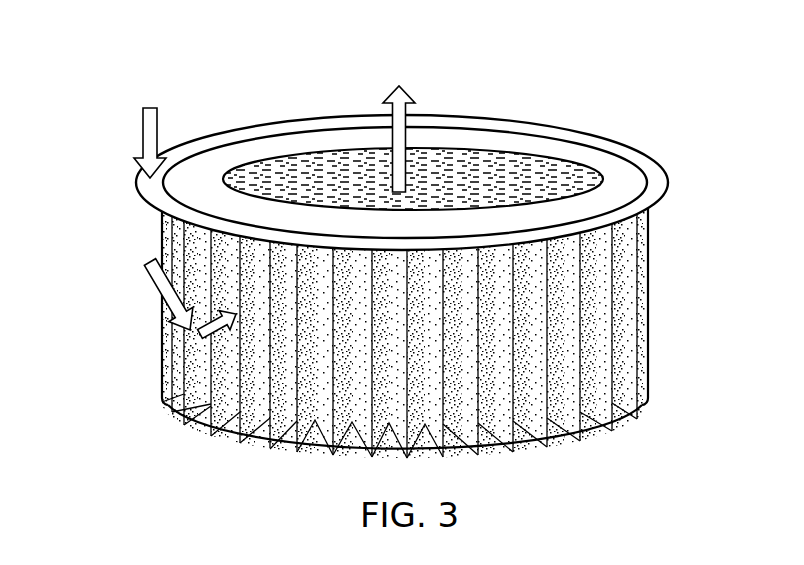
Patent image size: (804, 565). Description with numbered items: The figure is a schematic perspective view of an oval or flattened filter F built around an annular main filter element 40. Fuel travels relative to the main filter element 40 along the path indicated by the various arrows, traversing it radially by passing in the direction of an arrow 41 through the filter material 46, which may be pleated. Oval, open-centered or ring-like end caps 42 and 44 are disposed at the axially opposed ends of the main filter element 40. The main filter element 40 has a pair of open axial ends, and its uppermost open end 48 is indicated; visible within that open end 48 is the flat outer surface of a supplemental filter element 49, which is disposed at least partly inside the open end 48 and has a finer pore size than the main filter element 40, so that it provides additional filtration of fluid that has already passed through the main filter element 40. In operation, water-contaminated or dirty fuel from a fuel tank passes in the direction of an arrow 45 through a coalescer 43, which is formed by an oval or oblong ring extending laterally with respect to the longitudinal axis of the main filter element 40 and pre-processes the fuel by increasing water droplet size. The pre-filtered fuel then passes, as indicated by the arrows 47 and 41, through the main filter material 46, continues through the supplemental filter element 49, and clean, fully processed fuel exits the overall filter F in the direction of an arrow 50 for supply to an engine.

The main filter element 40 is at (459, 352).
The arrow 41 is at (212, 334).
The end cap 42 is at (597, 146).
The coalescer 43 is at (670, 167).
The end cap 44 is at (563, 443).
The arrow 45 is at (142, 122).
The filter material 46 is at (613, 361).
The arrow 47 is at (150, 278).
The uppermost open end 48 is at (283, 153).
The supplemental filter element 49 is at (507, 172).
The arrow 50 is at (408, 93).
The filter F is at (668, 320).